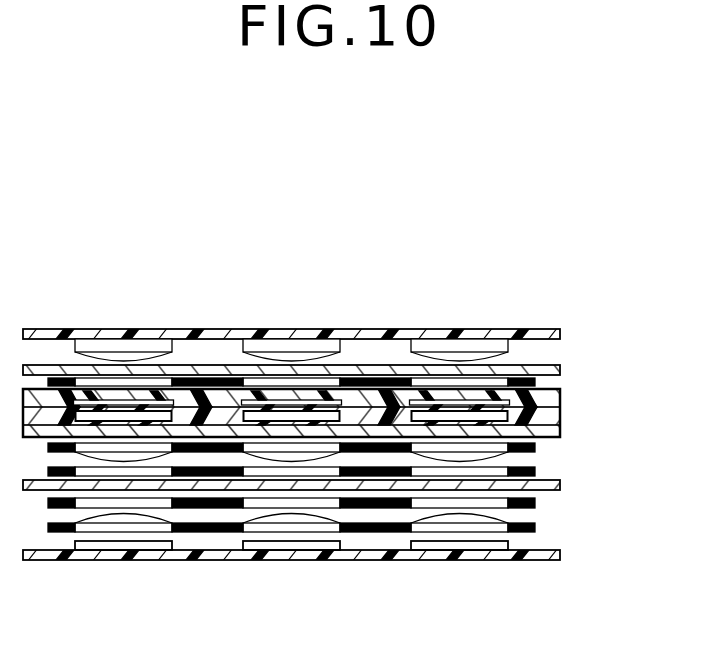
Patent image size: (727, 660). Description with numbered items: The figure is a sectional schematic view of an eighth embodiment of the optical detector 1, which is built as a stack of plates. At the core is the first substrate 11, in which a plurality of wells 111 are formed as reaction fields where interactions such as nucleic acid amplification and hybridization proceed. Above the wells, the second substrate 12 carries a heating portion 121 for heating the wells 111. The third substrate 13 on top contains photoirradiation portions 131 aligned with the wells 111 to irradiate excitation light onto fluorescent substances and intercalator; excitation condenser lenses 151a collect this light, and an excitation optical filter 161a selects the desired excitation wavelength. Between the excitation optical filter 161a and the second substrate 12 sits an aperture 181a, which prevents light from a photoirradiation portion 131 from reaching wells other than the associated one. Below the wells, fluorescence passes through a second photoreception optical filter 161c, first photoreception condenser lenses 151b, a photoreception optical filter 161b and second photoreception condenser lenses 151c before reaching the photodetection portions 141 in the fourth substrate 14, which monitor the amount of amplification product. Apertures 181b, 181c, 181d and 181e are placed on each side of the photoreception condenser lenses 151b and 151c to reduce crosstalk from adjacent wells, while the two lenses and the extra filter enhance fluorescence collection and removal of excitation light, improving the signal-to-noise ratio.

The optical detector 1 is at (123, 193).
The first substrate 11 is at (558, 410).
The second substrate 12 is at (560, 390).
The third substrate 13 is at (560, 334).
The fourth substrate 14 is at (560, 556).
The wells 111 is at (95, 417).
The heating portion 121 is at (274, 400).
The photoirradiation portions 131 is at (125, 345).
The photodetection portions 141 is at (158, 547).
The excitation condenser lenses 151a is at (158, 353).
The photoreception condenser lenses 151b is at (131, 455).
The second photoreception condenser lenses 151c is at (92, 518).
The excitation optical filter 161a is at (560, 368).
The photoreception optical filter 161b is at (560, 485).
The second photoreception optical filter 161c is at (558, 430).
The aperture 181a is at (53, 378).
The aperture 181b is at (535, 447).
The aperture 181c is at (535, 472).
The aperture 181d is at (535, 503).
The aperture 181e is at (535, 528).